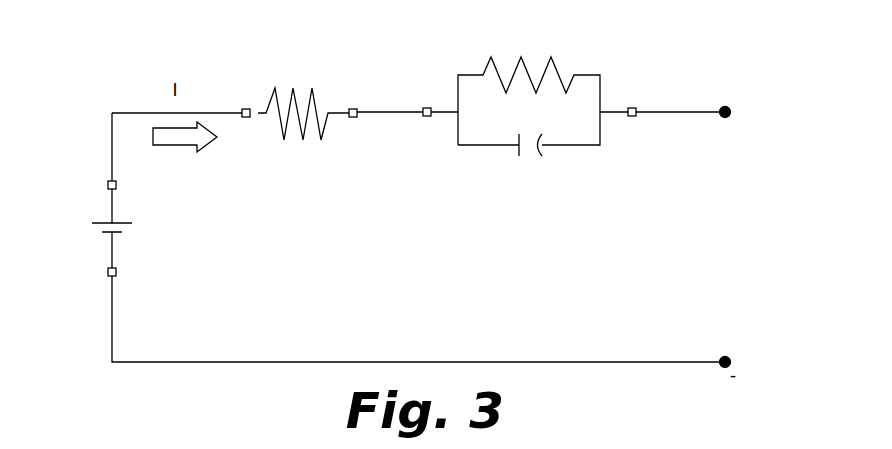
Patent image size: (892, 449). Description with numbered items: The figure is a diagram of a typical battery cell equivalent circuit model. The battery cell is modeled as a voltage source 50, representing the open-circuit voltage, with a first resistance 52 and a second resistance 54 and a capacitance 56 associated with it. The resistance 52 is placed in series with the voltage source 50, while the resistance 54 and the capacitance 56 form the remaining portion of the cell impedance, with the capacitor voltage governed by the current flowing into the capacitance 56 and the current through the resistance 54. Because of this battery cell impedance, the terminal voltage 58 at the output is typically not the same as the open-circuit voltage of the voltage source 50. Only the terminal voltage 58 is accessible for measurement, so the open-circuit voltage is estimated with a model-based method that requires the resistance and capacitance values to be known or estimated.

The voltage source 50 is at (123, 222).
The resistance 52 is at (292, 92).
The resistance 54 is at (549, 105).
The capacitance 56 is at (518, 153).
The terminal voltage 58 is at (733, 228).